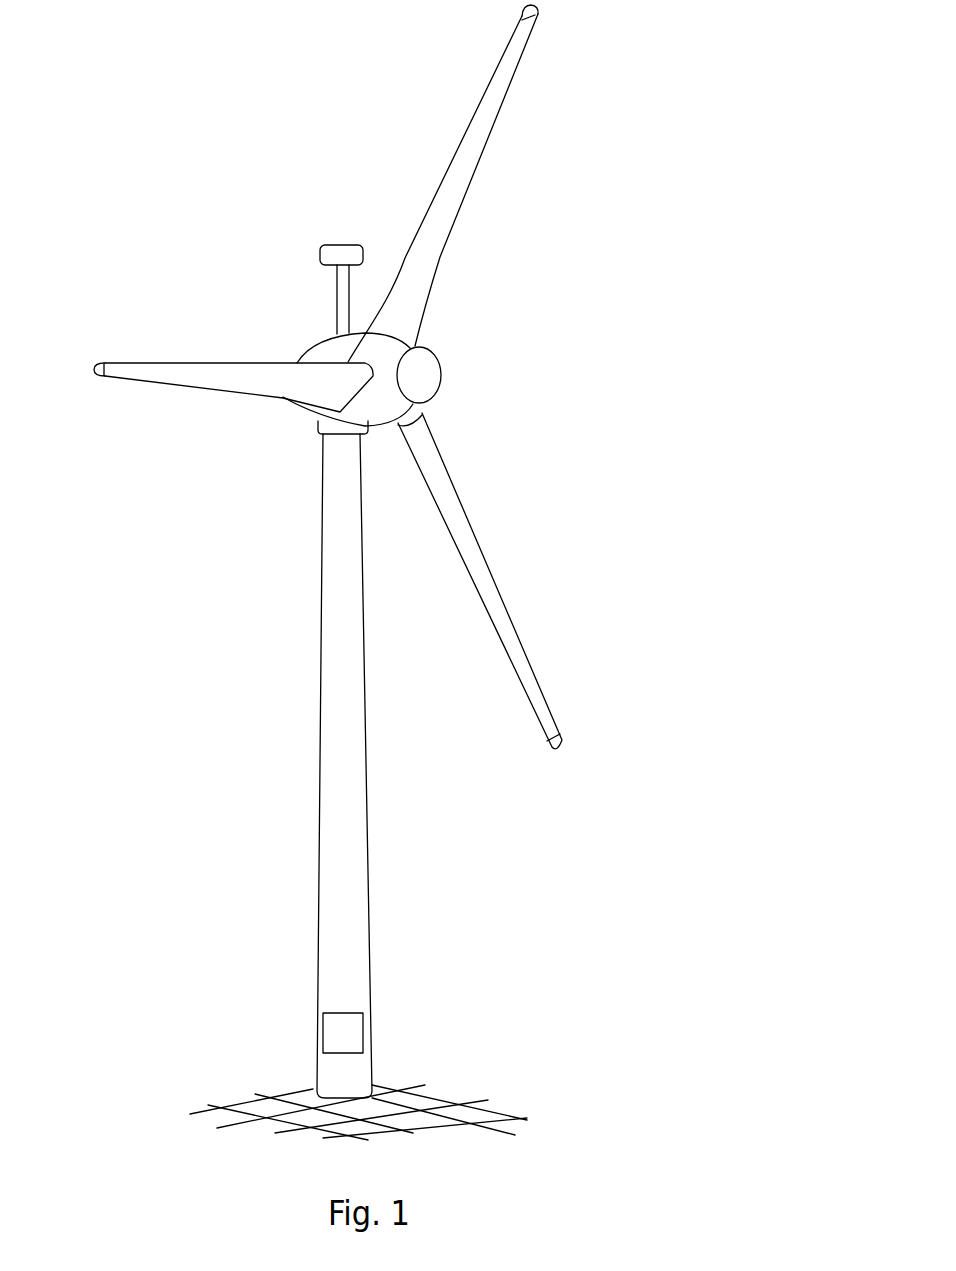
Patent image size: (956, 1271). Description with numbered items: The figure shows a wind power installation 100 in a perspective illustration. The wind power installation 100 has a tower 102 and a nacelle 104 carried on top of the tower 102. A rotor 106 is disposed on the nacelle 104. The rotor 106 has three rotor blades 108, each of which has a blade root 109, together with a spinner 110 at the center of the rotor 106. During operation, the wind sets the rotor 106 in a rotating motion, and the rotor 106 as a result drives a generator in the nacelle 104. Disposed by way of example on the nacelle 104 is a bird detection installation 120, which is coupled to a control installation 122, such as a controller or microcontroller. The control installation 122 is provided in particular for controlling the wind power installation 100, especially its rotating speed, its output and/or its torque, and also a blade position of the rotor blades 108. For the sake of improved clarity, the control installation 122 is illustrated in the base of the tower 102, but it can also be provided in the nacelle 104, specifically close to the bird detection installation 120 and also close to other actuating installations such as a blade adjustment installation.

The wind power installation 100 is at (276, 510).
The tower 102 is at (355, 843).
The nacelle 104 is at (319, 357).
The rotor 106 is at (518, 289).
The rotor blades 108 is at (480, 137).
The blade root 109 is at (422, 410).
The spinner 110 is at (423, 375).
The bird detection installation 120 is at (319, 210).
The control installation 122 is at (358, 1030).